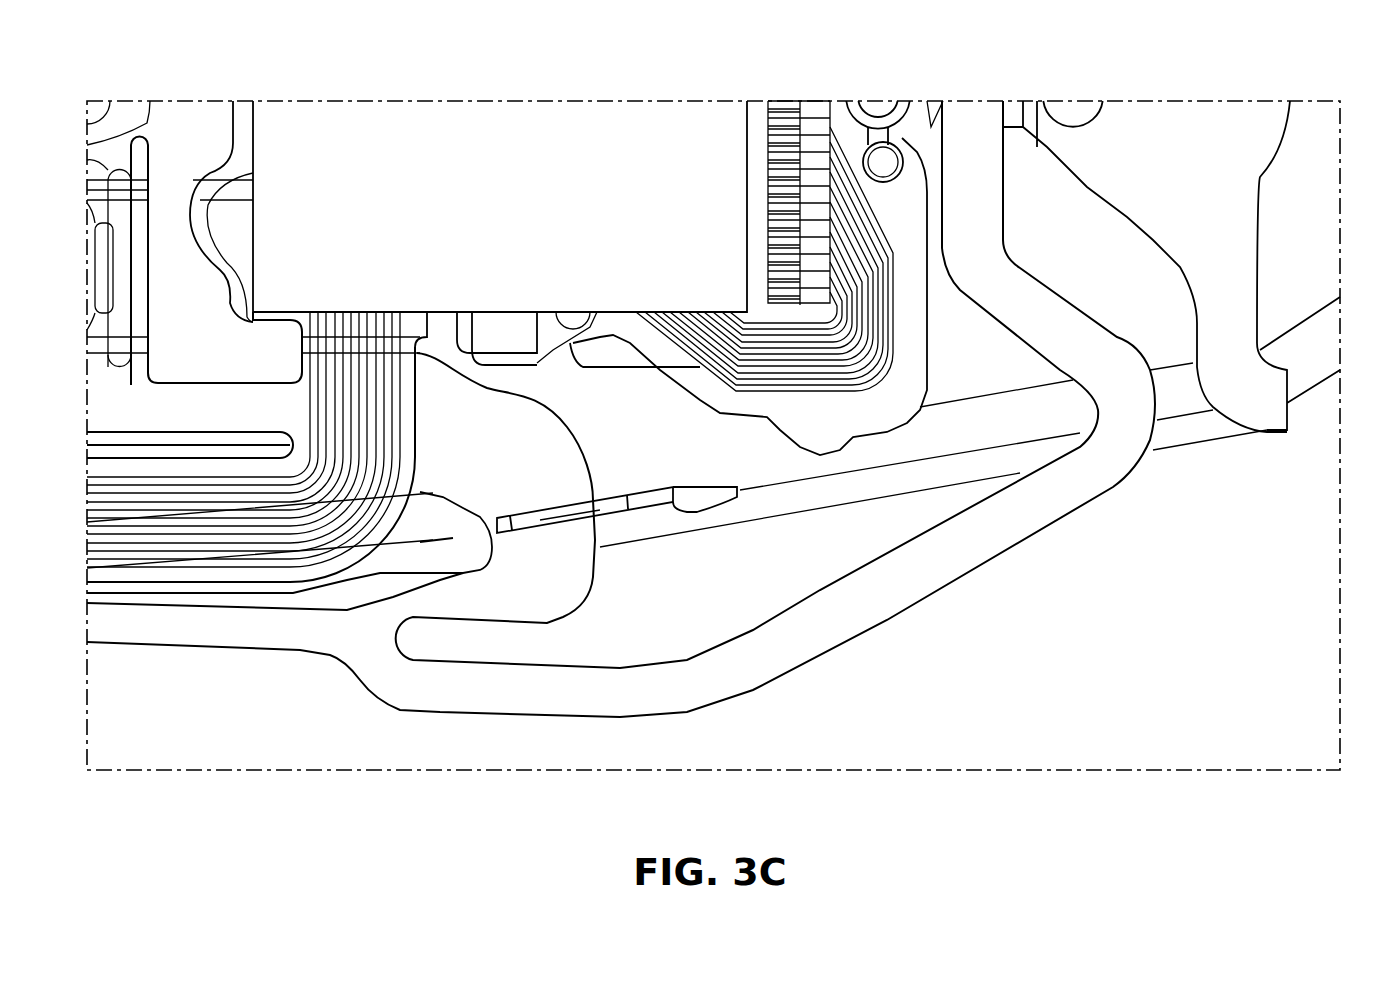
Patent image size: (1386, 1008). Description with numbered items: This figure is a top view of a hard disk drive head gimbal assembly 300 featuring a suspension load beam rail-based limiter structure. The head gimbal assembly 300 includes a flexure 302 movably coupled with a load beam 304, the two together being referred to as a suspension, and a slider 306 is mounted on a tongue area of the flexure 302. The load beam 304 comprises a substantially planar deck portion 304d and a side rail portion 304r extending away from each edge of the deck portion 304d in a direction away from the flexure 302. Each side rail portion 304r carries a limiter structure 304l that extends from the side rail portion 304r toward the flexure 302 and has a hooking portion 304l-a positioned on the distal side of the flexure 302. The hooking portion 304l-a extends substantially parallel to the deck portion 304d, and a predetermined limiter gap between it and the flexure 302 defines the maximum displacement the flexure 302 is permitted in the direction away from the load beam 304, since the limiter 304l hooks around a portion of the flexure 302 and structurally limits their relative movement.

The head gimbal assembly 300 is at (497, 84).
The flexure 302 is at (198, 630).
The load beam 304 is at (1312, 185).
The deck portion 304d is at (1145, 266).
The limiter structure 304l is at (643, 512).
The hooking portion 304l-a is at (540, 517).
The side rail portion 304r is at (792, 500).
The slider 306 is at (541, 206).